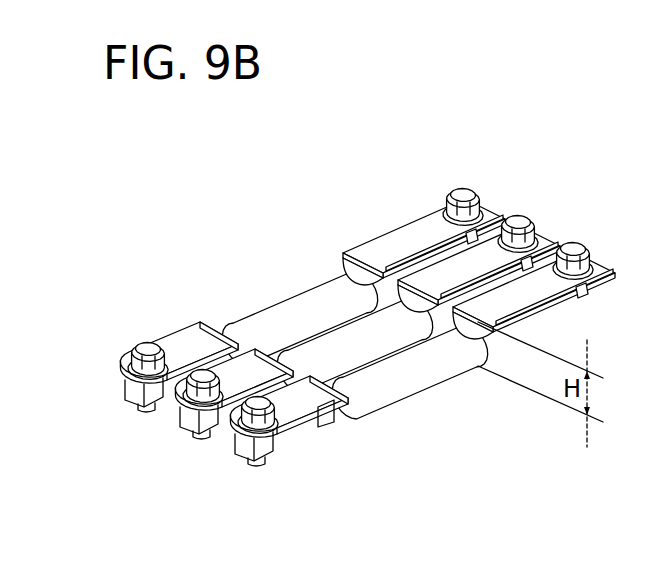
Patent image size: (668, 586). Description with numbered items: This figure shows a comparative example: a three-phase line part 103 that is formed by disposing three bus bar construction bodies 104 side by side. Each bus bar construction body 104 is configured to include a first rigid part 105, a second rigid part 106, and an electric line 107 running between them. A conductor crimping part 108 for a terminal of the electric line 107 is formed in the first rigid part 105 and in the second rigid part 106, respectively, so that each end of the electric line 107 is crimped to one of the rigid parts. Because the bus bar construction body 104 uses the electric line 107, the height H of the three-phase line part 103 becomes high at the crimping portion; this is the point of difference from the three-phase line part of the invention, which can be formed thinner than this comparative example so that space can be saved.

The three-phase line part 103 is at (248, 242).
The bus bar construction body 104 is at (475, 305).
The first rigid part 105 is at (292, 407).
The second rigid part 106 is at (538, 287).
The electric line 107 is at (393, 380).
The conductor crimping part 108 is at (517, 328).